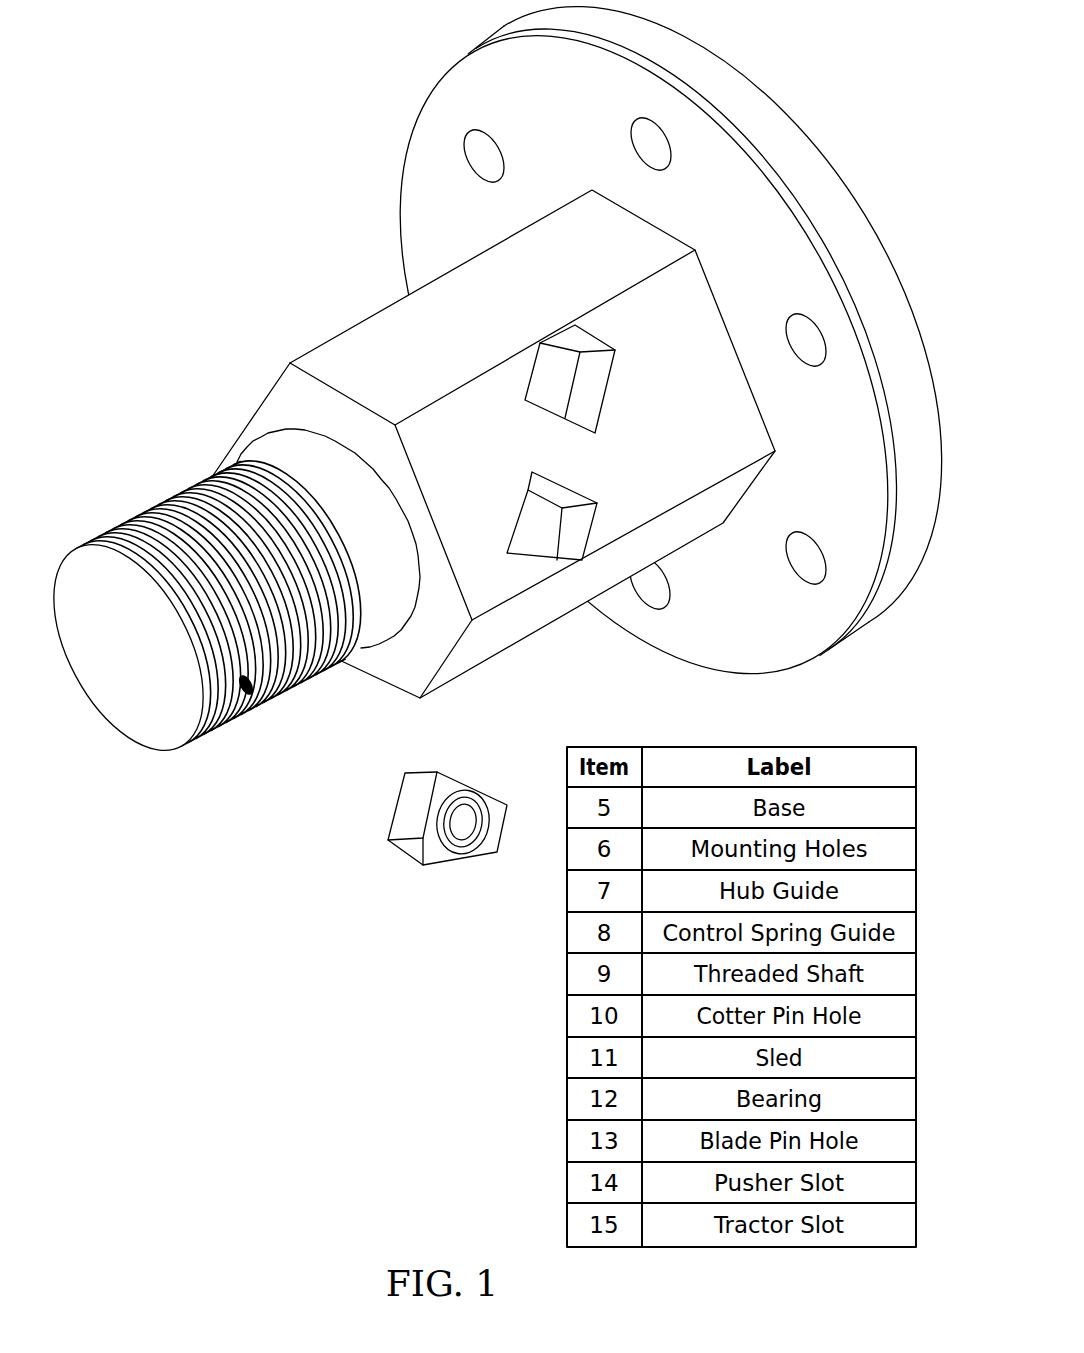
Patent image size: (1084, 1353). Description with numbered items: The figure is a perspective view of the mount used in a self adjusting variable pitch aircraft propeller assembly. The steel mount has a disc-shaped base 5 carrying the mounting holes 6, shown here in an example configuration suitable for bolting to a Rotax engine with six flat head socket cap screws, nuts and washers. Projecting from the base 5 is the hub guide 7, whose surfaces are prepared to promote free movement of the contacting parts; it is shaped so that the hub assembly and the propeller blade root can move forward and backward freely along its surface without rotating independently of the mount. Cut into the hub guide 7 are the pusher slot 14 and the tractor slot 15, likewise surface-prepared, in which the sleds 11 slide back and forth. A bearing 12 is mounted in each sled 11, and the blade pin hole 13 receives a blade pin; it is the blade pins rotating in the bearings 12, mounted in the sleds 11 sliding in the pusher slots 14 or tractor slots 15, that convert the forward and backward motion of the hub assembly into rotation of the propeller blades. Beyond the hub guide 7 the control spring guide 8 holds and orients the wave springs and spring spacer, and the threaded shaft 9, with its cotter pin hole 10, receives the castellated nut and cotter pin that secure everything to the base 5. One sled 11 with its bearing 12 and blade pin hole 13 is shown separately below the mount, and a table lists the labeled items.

The base 5 is at (643, 378).
The mounting holes 6 is at (541, 363).
The hub guide 7 is at (485, 444).
The control spring guide 8 is at (259, 505).
The threaded shaft 9 is at (207, 606).
The cotter pin hole 10 is at (199, 757).
The sled 11 is at (403, 811).
The bearing 12 is at (393, 824).
The blade pin hole 13 is at (384, 865).
The pusher slot 14 is at (728, 288).
The tractor slot 15 is at (572, 586).